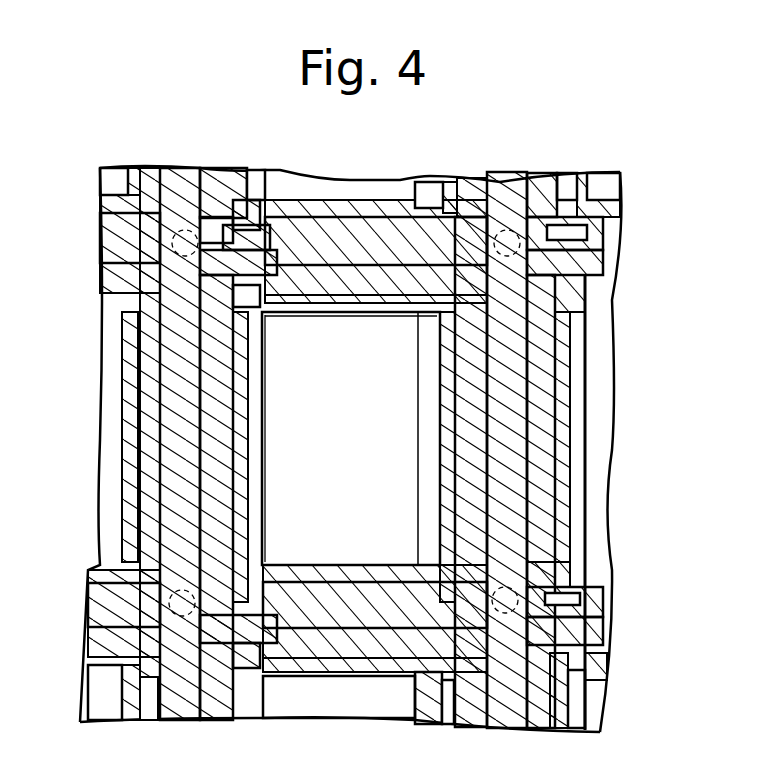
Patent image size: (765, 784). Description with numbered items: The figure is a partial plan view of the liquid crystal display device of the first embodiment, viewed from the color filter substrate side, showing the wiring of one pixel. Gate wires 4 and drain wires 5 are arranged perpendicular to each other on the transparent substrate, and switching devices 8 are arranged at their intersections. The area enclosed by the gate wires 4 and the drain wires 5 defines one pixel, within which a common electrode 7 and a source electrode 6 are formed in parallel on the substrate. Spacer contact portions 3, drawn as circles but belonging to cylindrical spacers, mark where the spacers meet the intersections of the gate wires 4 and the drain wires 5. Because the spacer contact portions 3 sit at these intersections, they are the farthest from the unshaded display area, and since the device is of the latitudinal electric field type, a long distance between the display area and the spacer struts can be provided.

The spacer contact portion 3 is at (185, 228).
The gate wire 4 is at (613, 240).
The drain wire 5 is at (176, 360).
The source electrode 6 is at (255, 445).
The common electrode 7 is at (435, 490).
The switching device 8 is at (138, 252).